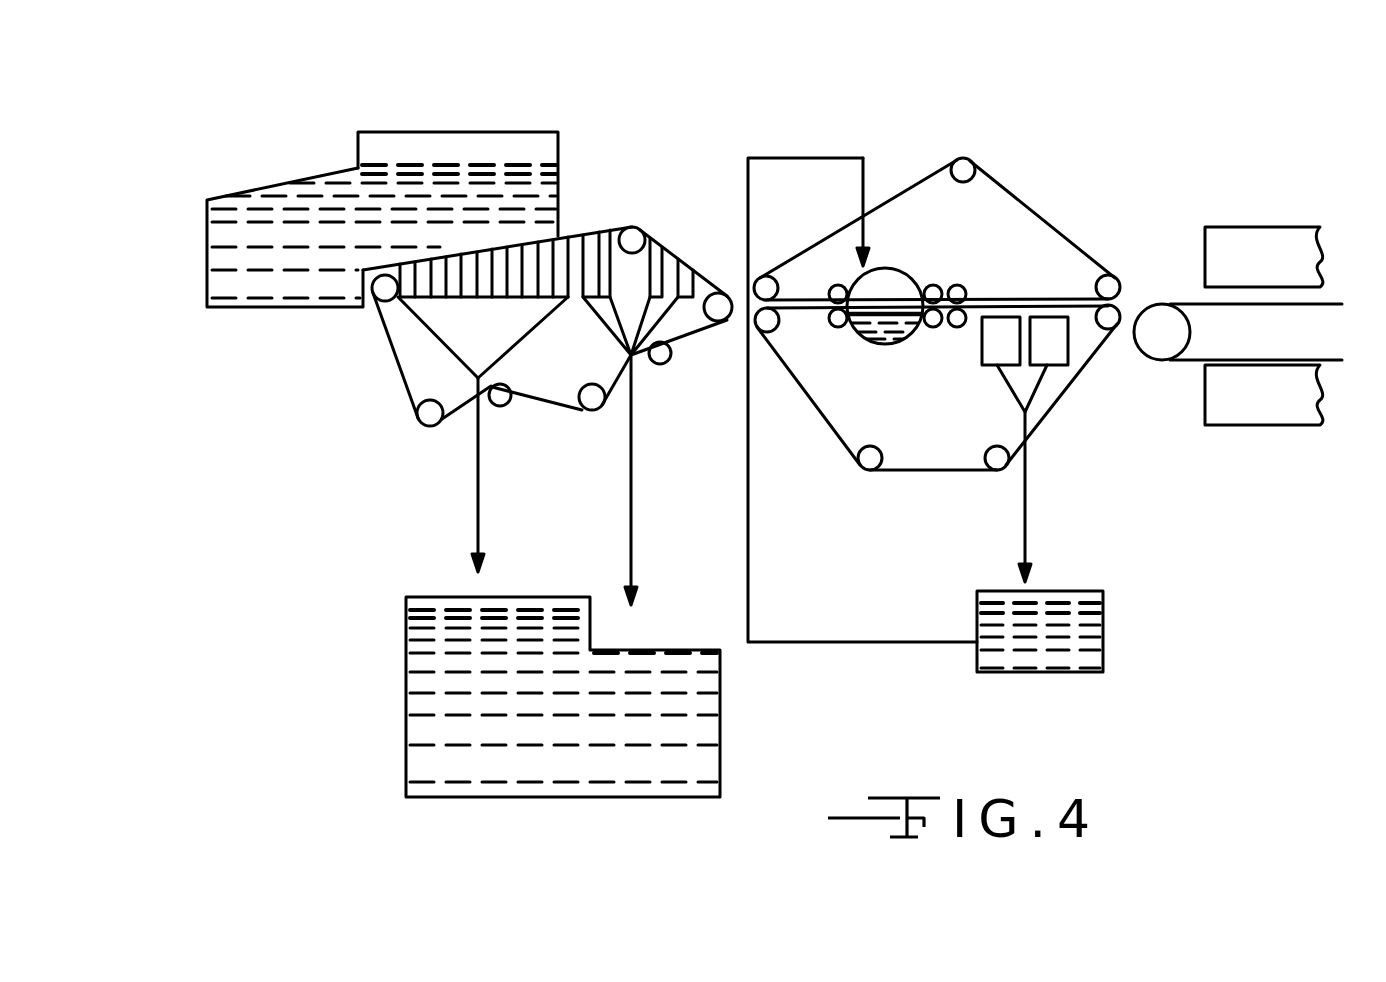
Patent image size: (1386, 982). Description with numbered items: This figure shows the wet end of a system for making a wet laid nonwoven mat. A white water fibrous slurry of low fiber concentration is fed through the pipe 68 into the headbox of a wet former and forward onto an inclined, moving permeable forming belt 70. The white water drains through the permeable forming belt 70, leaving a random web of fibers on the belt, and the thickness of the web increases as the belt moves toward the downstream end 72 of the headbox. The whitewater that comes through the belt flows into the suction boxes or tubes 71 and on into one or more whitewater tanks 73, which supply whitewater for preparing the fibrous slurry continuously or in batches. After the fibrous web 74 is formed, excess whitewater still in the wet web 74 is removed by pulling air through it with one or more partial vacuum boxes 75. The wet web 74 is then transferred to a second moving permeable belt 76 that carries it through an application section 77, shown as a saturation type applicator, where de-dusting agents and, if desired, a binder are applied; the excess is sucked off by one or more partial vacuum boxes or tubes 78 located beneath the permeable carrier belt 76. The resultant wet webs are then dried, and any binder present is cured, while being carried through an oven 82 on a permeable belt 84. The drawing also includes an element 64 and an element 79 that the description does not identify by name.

The feed hopper 64 is at (425, 132).
The pipe 68 is at (207, 238).
The permeable forming belt 70 is at (389, 342).
The suction boxes or tubes 71 is at (452, 286).
The downstream end 72 is at (560, 146).
The whitewater tanks 73 is at (406, 728).
The fibrous web 74 is at (566, 236).
The partial vacuum boxes 75 is at (686, 278).
The second moving permeable belt 76 is at (820, 412).
The application section 77 is at (1024, 186).
The partial vacuum boxes or tubes 78 is at (1010, 348).
The recycled material 79 is at (1083, 643).
The oven 82 is at (1255, 238).
The permeable belt 84 is at (1190, 300).